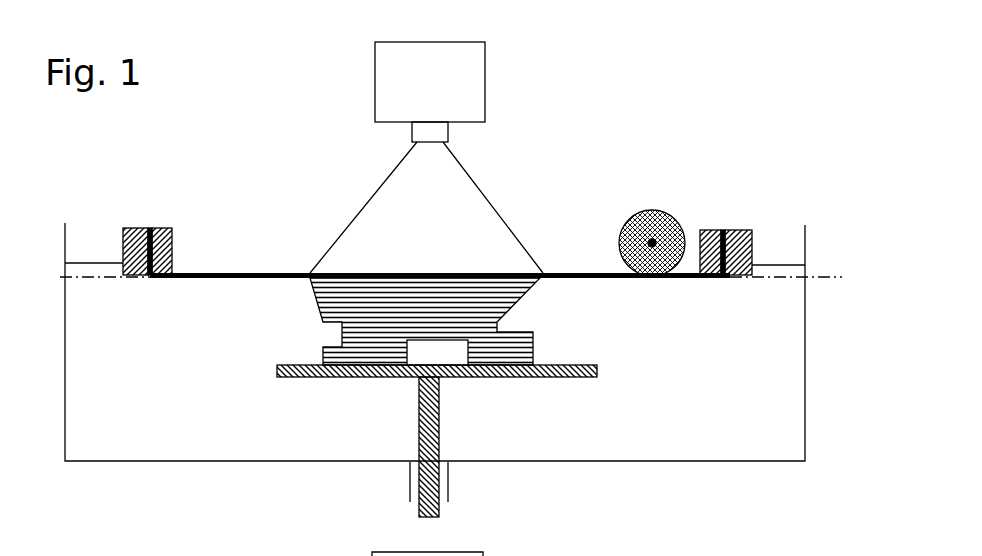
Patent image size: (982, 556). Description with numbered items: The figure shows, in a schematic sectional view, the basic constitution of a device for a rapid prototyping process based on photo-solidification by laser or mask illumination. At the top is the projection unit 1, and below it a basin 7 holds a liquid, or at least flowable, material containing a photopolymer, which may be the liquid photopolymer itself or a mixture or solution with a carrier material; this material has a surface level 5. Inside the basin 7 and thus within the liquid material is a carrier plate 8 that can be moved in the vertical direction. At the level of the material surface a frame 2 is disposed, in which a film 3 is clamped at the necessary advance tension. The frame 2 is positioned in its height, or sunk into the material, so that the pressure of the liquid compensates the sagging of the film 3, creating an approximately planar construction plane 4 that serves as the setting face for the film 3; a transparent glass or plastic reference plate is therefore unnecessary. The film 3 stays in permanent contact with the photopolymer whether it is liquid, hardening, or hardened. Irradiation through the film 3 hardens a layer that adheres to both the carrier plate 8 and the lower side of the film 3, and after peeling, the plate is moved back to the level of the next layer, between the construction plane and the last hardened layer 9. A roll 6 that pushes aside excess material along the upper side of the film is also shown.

The projection unit 1 is at (458, 86).
The frame 2 is at (137, 232).
The film 3 is at (200, 273).
The construction plane 4 is at (823, 277).
The surface level 5 is at (777, 265).
The spherical body 6 is at (633, 232).
The basin 7 is at (295, 462).
The carrier plate 8 is at (550, 377).
The last hardened layer 9 is at (508, 300).